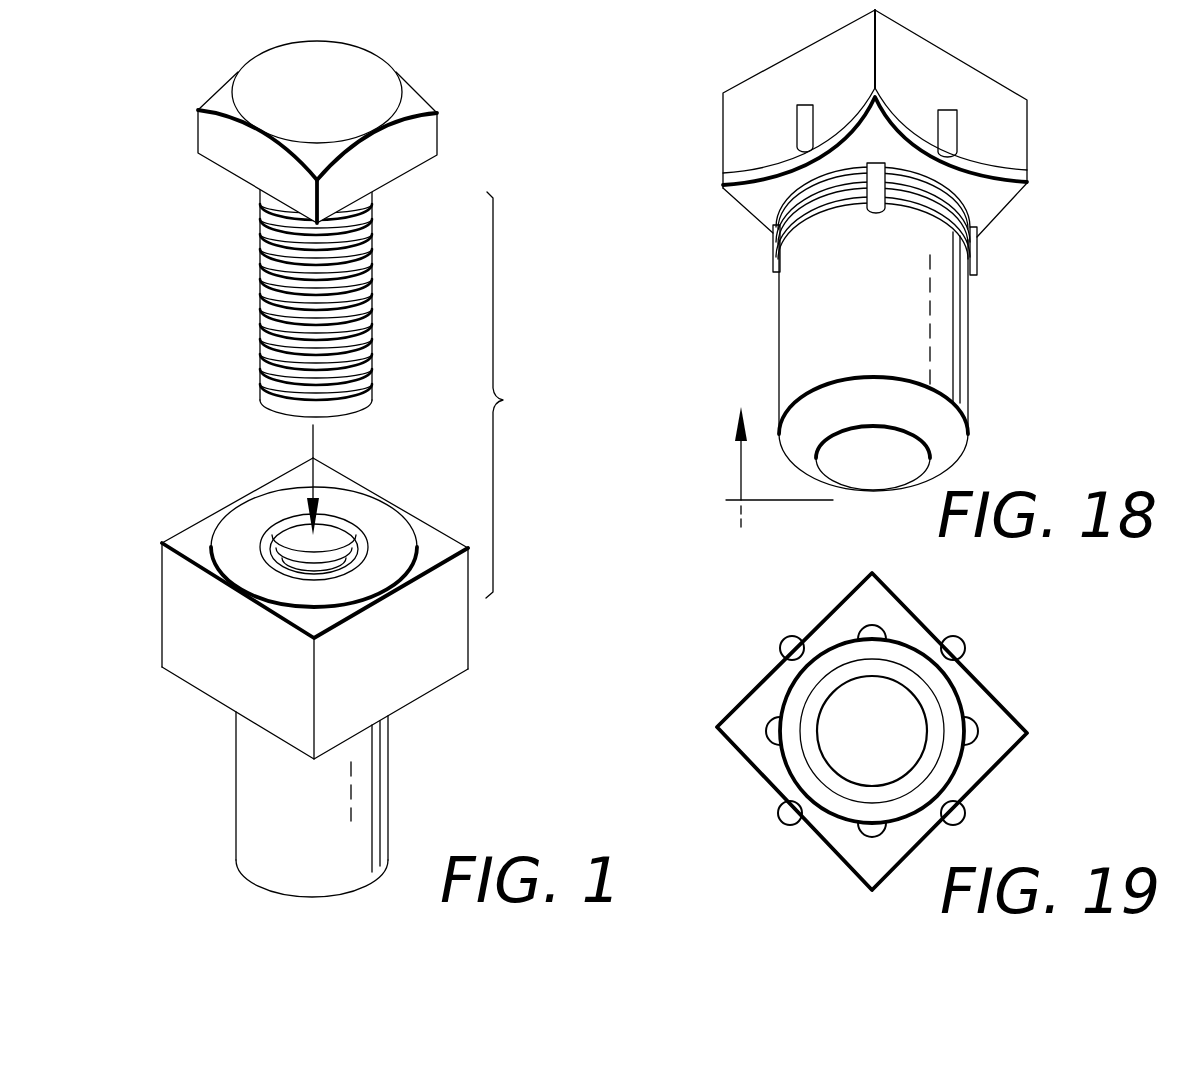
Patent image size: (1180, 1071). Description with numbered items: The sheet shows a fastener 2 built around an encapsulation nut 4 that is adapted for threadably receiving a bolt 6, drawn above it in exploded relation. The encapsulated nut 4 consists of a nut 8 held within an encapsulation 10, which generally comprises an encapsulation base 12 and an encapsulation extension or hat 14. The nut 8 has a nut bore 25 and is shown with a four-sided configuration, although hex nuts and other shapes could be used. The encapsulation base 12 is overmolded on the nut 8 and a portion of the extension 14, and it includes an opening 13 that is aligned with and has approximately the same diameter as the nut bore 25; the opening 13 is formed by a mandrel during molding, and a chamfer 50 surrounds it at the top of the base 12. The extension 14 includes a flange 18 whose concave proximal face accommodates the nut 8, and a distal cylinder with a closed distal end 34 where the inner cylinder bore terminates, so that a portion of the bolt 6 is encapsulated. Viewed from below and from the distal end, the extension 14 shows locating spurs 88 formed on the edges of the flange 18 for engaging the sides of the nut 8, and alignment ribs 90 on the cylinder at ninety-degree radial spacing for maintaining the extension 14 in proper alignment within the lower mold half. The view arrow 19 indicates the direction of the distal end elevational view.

In FIG. 1, the fastener 2 is at (168, 361).
In FIG. 1, the encapsulation nut 4 is at (162, 543).
In FIG. 1, the bolt 6 is at (198, 110).
In FIG. 18, the nut 8 is at (1027, 100).
In FIG. 1, the encapsulation 10 is at (468, 669).
In FIG. 1, the encapsulation base 12 is at (224, 671).
In FIG. 1, the opening 13 is at (265, 540).
In FIG. 1, the encapsulation extension 14 is at (273, 813).
In FIG. 18, the encapsulation extension 14 is at (970, 433).
In FIG. 18, the flange 18 is at (1027, 183).
In FIG. 19, the flange 18 is at (717, 727).
In FIG. 1, the nut bore 25 is at (347, 530).
In FIG. 19, the distal end 34 is at (852, 749).
In FIG. 1, the chamfer 50 is at (287, 530).
In FIG. 18, the locating spurs 88 is at (812, 107).
In FIG. 19, the locating spurs 88 is at (786, 640).
In FIG. 18, the alignment ribs 90 is at (878, 217).
In FIG. 19, the alignment ribs 90 is at (880, 627).
In FIG. 18, the view direction indicator 19 is at (767, 469).